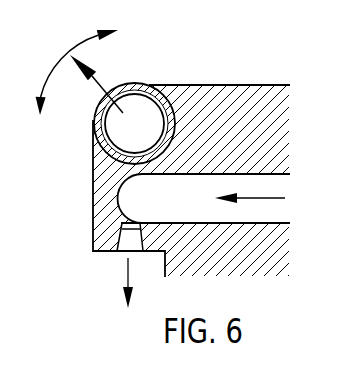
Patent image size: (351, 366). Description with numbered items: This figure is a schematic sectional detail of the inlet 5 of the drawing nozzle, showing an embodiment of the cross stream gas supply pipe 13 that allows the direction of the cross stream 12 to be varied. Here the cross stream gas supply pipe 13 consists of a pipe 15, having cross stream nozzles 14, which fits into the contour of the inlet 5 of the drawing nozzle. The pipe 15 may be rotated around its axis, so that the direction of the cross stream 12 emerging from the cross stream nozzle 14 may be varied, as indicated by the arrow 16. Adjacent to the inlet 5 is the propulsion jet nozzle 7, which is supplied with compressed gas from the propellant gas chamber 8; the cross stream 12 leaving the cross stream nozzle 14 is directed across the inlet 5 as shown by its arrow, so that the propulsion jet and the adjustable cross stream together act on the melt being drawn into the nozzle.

The inlet of the drawing nozzle 5 is at (57, 202).
The propulsion jet nozzle 7 is at (122, 253).
The propellant gas chamber 8 is at (264, 187).
The cross stream 12 is at (90, 73).
The cross stream gas supply pipe 13 is at (152, 93).
The cross stream nozzle 14 is at (146, 112).
The pipe 15 is at (95, 115).
The arrow 16 is at (74, 44).